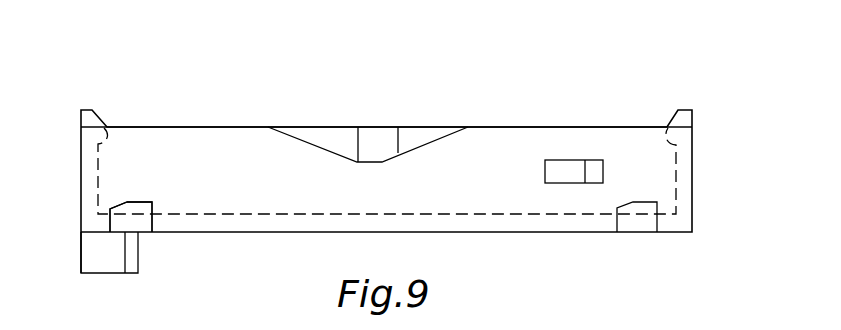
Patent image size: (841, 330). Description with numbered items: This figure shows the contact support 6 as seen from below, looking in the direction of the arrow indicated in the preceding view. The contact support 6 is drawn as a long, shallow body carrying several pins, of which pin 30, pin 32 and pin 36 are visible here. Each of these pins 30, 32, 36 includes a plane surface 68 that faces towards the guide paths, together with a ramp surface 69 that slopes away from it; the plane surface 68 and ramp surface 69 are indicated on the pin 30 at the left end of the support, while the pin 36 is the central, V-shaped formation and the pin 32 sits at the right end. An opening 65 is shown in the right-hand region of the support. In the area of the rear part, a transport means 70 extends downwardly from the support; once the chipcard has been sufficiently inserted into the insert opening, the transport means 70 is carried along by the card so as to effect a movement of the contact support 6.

The tray 6 is at (183, 128).
The pin 36 is at (387, 128).
The pin 30 is at (153, 222).
The plane surface 68 is at (120, 202).
The ramp surface 69 is at (142, 202).
The transport means 70 is at (130, 264).
The opening 65 is at (575, 173).
The pin 32 is at (658, 223).